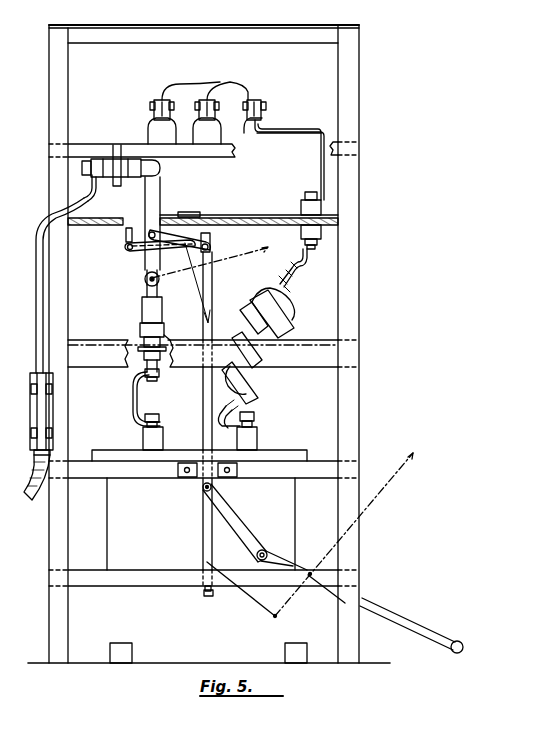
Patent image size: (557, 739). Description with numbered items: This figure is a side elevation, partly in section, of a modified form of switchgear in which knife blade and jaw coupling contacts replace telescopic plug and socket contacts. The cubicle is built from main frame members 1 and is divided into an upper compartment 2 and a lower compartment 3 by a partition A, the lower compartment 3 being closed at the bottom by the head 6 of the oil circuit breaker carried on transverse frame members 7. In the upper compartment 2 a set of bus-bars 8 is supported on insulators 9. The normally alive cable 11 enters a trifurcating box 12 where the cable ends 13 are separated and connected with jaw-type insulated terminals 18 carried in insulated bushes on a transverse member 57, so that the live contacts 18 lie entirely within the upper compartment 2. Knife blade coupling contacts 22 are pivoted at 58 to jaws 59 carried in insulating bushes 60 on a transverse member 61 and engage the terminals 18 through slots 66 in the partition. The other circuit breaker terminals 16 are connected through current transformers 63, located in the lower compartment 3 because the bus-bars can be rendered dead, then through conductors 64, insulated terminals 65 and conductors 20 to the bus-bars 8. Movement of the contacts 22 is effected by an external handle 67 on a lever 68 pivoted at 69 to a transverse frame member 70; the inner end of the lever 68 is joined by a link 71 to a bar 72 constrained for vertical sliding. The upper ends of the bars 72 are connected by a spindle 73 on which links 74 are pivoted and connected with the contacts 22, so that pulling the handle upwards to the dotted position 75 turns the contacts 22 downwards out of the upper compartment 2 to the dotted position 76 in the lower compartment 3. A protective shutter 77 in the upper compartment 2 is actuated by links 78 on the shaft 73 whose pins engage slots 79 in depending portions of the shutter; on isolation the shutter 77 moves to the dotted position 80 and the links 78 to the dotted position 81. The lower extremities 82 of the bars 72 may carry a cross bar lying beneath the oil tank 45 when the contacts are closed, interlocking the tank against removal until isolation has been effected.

The main frame members 1 is at (66, 540).
The upper compartment 2 is at (293, 162).
The lower compartment 3 is at (90, 322).
The head of the oil circuit breaker 6 is at (306, 452).
The transverse frame members 7 is at (322, 470).
The bus-bars 8 is at (205, 84).
The insulators 9 is at (150, 136).
The cable 11 is at (26, 496).
The trifurcating box 12 is at (48, 424).
The cable ends 13 is at (99, 190).
The circuit breaker terminals 16 is at (258, 416).
The insulated terminals 18 is at (158, 164).
The conductors 20 is at (296, 121).
The knife blade coupling contacts 22 is at (152, 188).
The oil tank 45 is at (190, 494).
The transverse member 57 is at (120, 186).
The pivot 58 is at (146, 280).
The jaws 59 is at (144, 304).
The insulating bushes 60 is at (140, 326).
The transverse member 61 is at (170, 344).
The current transformers 63 is at (258, 322).
The conductors 64 is at (304, 262).
The insulated terminals 65 is at (322, 208).
The slots 66 is at (250, 220).
The external handle 67 is at (462, 642).
The lever 68 is at (392, 612).
The pivot 69 is at (305, 590).
The transverse frame member 70 is at (160, 588).
The link 71 is at (246, 516).
The bar 72 is at (206, 504).
The spindle 73 is at (220, 240).
The links 74 is at (204, 230).
The dotted line position of handle 75 is at (422, 454).
The dotted line position of contacts 76 is at (260, 252).
The protective shutter 77 is at (72, 204).
The links 78 is at (136, 252).
The slots 79 is at (126, 246).
The dotted line position of shutter 80 is at (186, 212).
The dotted line position of links 81 is at (200, 290).
The lower extremities of bars 82 is at (212, 591).
The plate A is at (286, 218).